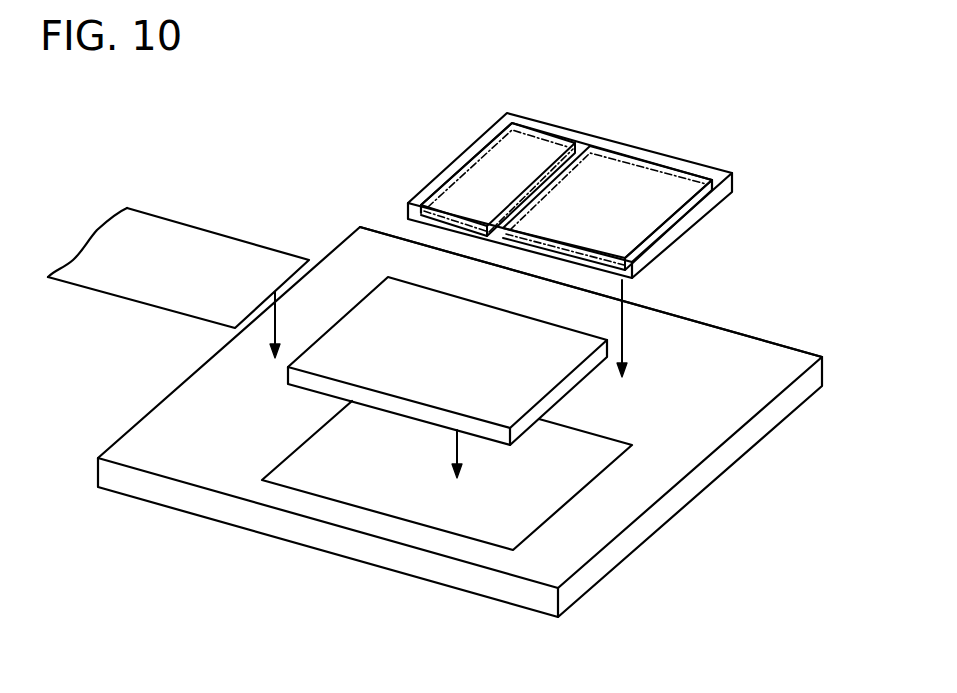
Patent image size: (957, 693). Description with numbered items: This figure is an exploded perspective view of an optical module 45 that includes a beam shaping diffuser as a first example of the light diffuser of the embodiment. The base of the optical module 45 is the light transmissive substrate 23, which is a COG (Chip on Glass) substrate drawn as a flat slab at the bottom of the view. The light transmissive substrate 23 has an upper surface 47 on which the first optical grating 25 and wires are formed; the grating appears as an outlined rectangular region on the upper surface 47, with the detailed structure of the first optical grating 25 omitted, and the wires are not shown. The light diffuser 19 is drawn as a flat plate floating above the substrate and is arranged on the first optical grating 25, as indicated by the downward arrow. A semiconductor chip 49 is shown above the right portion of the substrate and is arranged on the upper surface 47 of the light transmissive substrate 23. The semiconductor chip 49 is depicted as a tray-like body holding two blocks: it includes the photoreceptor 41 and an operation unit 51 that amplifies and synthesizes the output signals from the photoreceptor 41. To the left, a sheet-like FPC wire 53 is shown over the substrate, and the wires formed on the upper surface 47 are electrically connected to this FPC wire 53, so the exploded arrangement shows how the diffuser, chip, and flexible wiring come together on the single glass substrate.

The optical module 45 is at (832, 70).
The light transmissive substrate 23 is at (795, 395).
The upper surface 47 is at (687, 440).
The first optical grating 25 is at (415, 520).
The light diffuser 19 is at (313, 382).
The FPC wire 53 is at (185, 225).
The semiconductor chip 49 is at (575, 133).
The operation unit 51 is at (527, 120).
The photoreceptor 41 is at (647, 162).